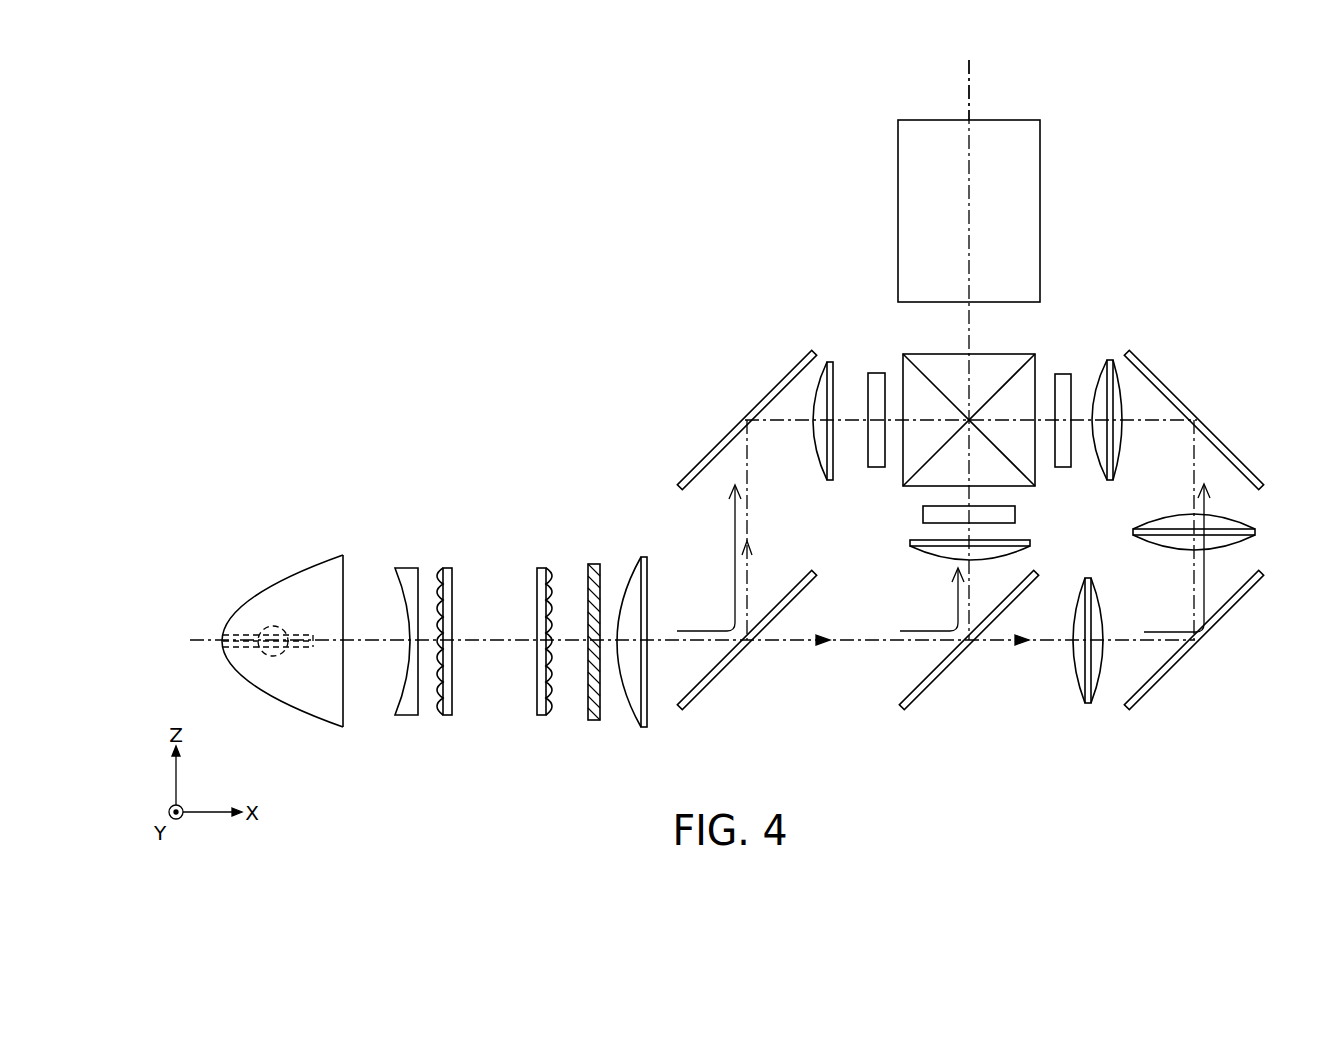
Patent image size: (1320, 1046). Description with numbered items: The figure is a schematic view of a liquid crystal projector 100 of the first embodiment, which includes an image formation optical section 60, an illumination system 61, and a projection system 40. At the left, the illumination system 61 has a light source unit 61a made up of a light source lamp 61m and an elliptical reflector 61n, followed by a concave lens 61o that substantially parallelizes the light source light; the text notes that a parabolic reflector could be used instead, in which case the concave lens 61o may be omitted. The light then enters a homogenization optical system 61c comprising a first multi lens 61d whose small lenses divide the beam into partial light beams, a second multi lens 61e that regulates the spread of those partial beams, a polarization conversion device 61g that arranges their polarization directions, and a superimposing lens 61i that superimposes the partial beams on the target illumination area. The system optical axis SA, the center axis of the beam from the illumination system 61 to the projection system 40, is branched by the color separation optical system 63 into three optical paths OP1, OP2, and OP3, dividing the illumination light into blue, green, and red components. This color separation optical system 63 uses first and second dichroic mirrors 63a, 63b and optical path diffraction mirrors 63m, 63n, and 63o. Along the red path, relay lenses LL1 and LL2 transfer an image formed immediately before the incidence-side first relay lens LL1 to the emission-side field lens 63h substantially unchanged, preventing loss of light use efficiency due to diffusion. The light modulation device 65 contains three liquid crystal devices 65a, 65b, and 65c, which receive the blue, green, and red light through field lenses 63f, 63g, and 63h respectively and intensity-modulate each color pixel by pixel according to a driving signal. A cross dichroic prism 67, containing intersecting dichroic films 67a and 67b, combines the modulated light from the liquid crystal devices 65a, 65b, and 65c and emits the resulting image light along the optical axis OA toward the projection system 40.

The liquid crystal projector 100 is at (1292, 70).
The projection system 40 is at (886, 192).
The optical axis OA is at (969, 87).
The image formation optical section 60 is at (1227, 337).
The illumination system 61 is at (410, 527).
The light source unit 61a is at (295, 560).
The reflector 61n is at (243, 598).
The light source lamp 61m is at (270, 656).
The concave lens 61o is at (410, 715).
The homogenization optical system 61c is at (435, 556).
The first multi lens 61d is at (445, 715).
The second multi lens 61e is at (543, 715).
The polarization conversion device 61g is at (595, 720).
The superimposing lens 61i is at (635, 727).
The system optical axis SA is at (490, 643).
The color separation optical system 63 is at (1182, 692).
The optical path diffraction mirror 63m is at (760, 400).
The optical path diffraction mirror 63o is at (1180, 400).
The first dichroic mirror 63a is at (705, 688).
The second dichroic mirror 63b is at (927, 688).
The optical path diffraction mirror 63n is at (1243, 595).
The field lens 63f is at (823, 437).
The field lens 63g is at (910, 543).
The field lens 63h is at (1109, 389).
The light modulation device 65 is at (866, 357).
The liquid crystal device 65a is at (875, 467).
The liquid crystal device 65b is at (923, 512).
The liquid crystal device 65c is at (1064, 372).
The cross dichroic prism 67 is at (923, 336).
The dichroic film 67a is at (1022, 348).
The dichroic film 67b is at (912, 360).
The optical path OP1 is at (735, 517).
The optical path OP2 is at (958, 593).
The optical path OP3 is at (1206, 508).
The first relay lens LL1 is at (1090, 703).
The second relay lens LL2 is at (1133, 534).